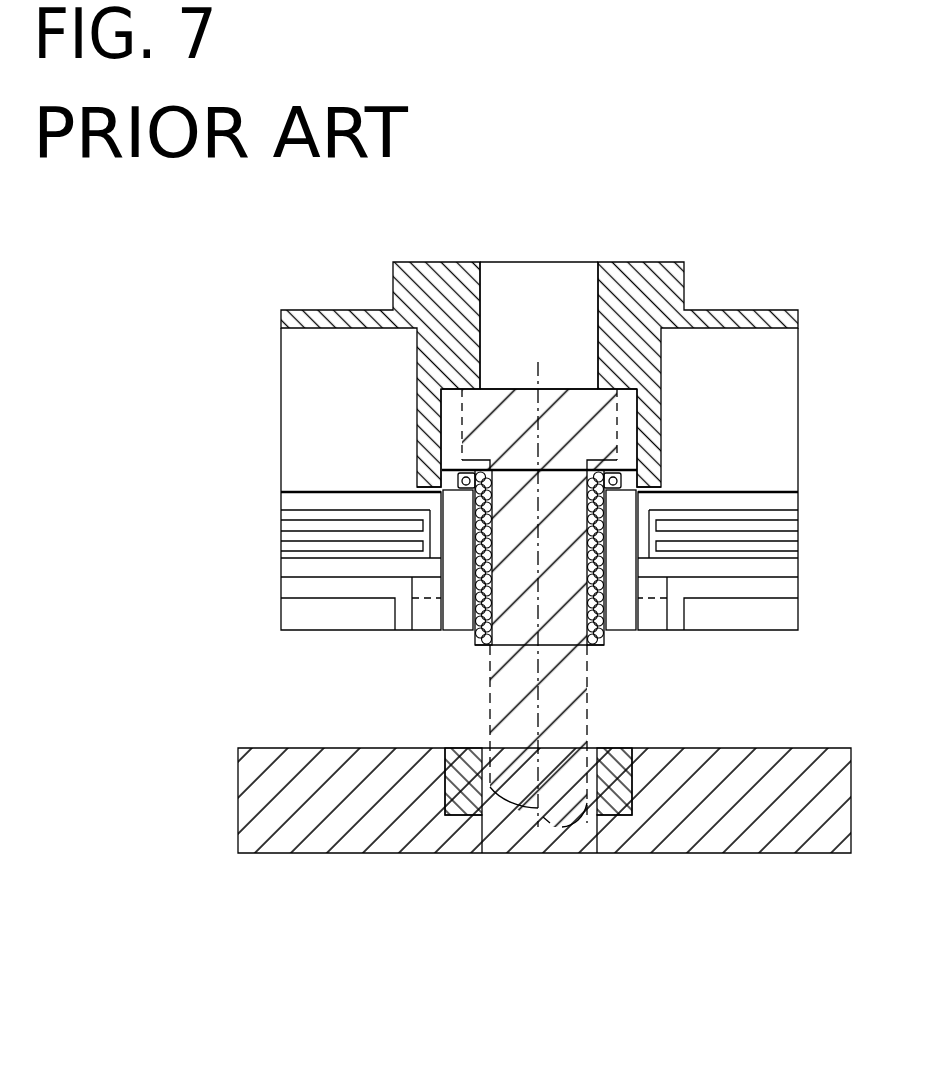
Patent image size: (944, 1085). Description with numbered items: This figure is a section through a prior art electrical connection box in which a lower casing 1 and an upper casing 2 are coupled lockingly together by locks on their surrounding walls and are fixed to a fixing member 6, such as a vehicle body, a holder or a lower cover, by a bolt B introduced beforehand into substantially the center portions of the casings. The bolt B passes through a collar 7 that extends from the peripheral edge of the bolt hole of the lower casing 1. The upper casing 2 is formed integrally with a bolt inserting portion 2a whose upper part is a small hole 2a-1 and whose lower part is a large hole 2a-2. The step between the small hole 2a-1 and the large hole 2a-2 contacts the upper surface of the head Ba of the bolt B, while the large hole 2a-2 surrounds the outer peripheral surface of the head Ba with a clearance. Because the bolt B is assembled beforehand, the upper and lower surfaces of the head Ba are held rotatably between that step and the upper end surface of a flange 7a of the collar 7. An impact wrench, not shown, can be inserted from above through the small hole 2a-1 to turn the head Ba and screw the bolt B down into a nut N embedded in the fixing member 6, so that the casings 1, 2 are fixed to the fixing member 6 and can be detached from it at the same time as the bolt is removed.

The lower casing 1 is at (780, 588).
The upper casing 2 is at (768, 308).
The bolt inserting portion 2a is at (447, 410).
The small hole 2a-1 is at (550, 290).
The large hole 2a-2 is at (632, 430).
The fixing member 6 is at (720, 800).
The collar 7 is at (455, 630).
The flange 7a is at (462, 480).
The bolt B is at (567, 688).
The head Ba is at (520, 387).
The nut N is at (463, 790).